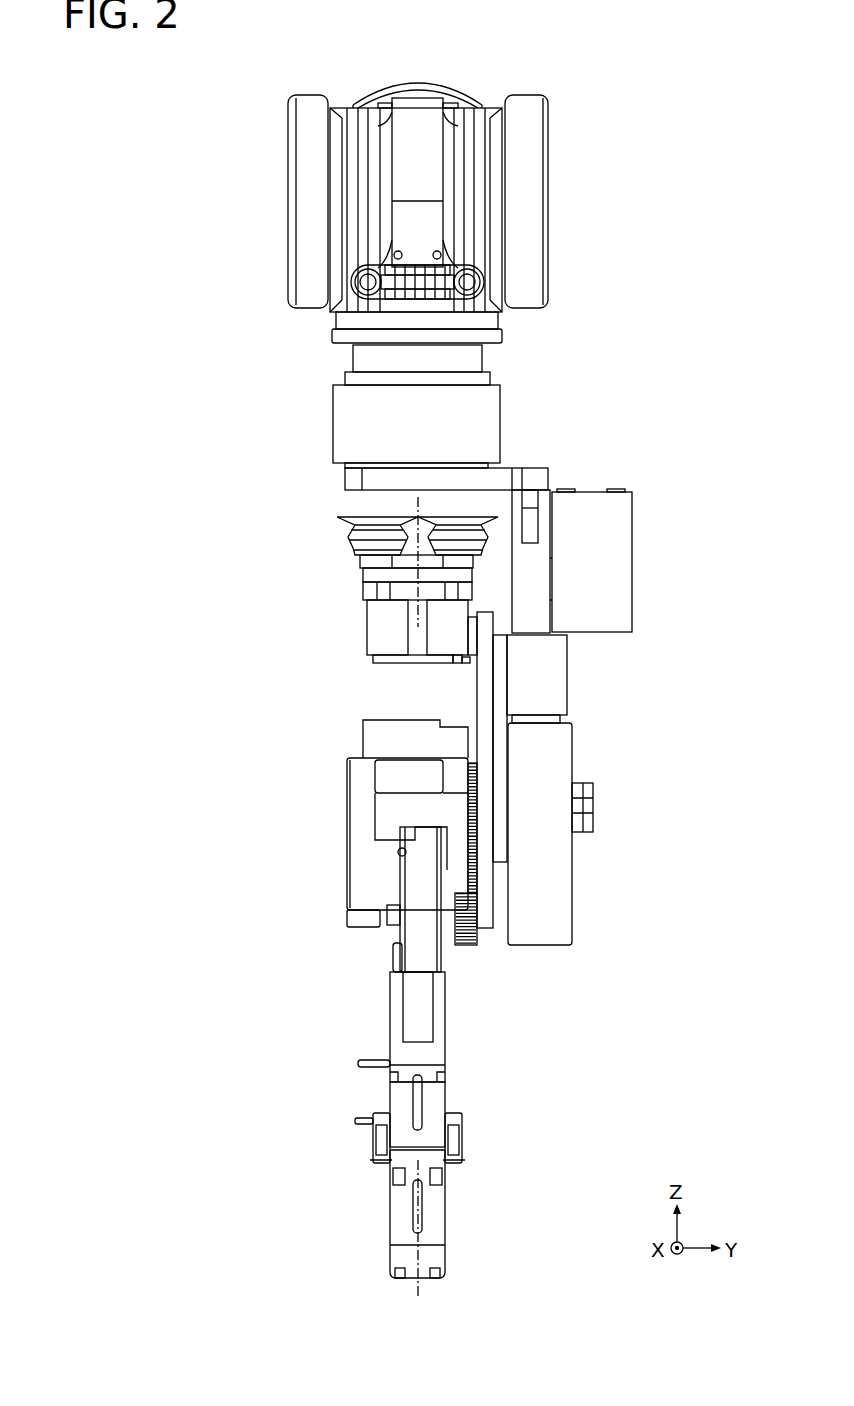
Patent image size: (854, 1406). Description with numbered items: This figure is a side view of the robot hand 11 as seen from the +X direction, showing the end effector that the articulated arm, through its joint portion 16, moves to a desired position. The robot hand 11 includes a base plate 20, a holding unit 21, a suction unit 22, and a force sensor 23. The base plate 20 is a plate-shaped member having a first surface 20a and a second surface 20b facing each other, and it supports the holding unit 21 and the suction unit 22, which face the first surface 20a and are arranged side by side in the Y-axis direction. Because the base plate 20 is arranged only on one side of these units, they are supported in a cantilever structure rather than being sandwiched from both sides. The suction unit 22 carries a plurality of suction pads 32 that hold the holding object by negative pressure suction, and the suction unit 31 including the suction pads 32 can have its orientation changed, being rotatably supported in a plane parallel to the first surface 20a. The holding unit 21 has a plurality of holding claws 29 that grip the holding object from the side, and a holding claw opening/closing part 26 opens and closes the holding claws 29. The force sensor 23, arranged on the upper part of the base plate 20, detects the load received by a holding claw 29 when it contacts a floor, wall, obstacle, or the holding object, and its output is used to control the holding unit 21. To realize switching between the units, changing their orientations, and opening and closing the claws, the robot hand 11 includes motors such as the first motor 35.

The robot hand 11 is at (246, 358).
The joint portion 16 is at (543, 162).
The base plate 20 is at (487, 494).
The first surface 20a is at (503, 505).
The second surface 20b is at (550, 508).
The holding unit 21 is at (330, 809).
The suction unit 22 is at (278, 570).
The force sensor 23 is at (353, 430).
The holding claw opening/closing part 26 is at (372, 978).
The holding claw 29 is at (400, 1218).
The suction unit 31 is at (336, 581).
The suction pad 32 is at (347, 530).
The first motor 35 is at (557, 703).